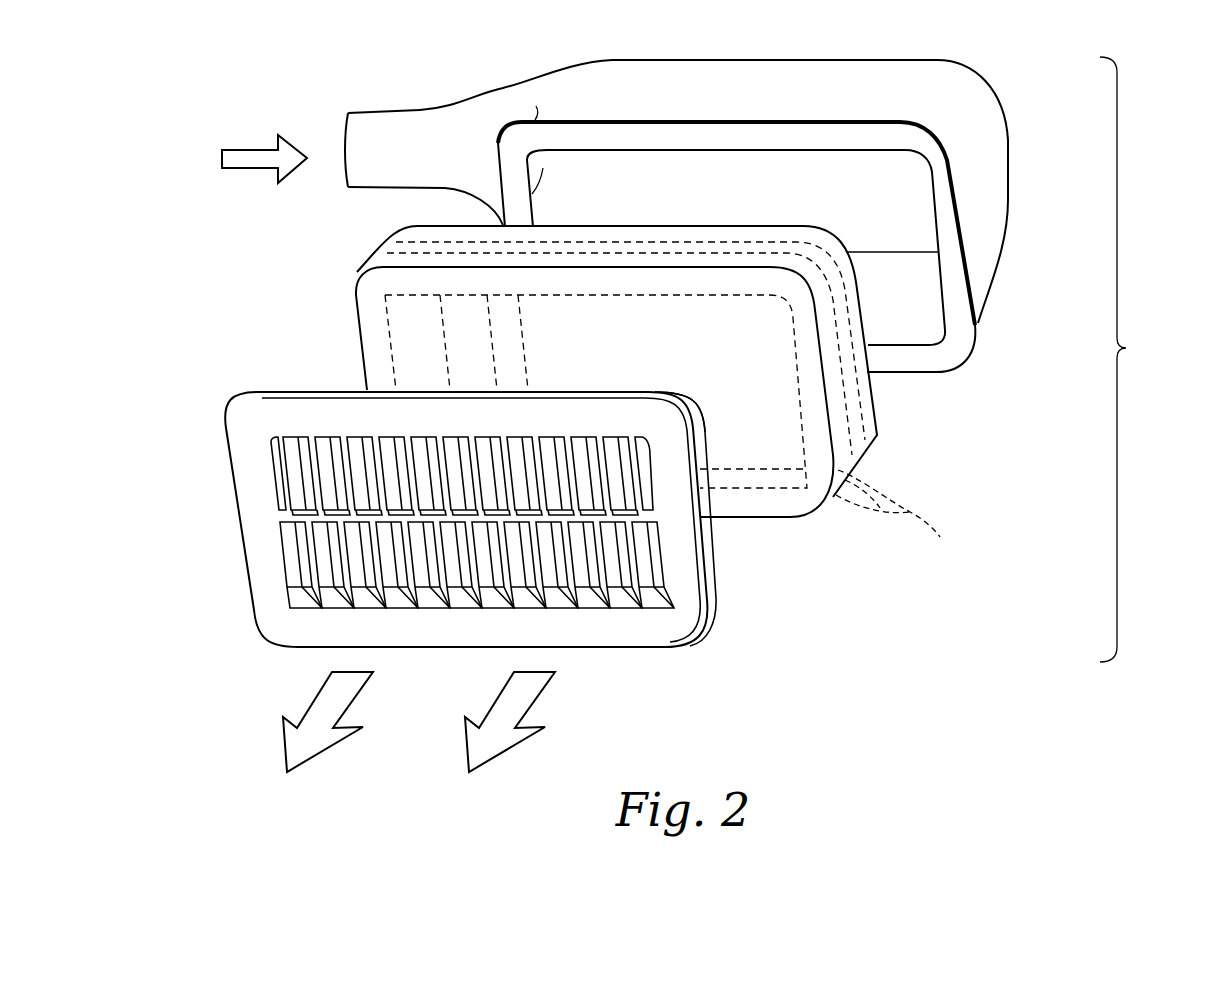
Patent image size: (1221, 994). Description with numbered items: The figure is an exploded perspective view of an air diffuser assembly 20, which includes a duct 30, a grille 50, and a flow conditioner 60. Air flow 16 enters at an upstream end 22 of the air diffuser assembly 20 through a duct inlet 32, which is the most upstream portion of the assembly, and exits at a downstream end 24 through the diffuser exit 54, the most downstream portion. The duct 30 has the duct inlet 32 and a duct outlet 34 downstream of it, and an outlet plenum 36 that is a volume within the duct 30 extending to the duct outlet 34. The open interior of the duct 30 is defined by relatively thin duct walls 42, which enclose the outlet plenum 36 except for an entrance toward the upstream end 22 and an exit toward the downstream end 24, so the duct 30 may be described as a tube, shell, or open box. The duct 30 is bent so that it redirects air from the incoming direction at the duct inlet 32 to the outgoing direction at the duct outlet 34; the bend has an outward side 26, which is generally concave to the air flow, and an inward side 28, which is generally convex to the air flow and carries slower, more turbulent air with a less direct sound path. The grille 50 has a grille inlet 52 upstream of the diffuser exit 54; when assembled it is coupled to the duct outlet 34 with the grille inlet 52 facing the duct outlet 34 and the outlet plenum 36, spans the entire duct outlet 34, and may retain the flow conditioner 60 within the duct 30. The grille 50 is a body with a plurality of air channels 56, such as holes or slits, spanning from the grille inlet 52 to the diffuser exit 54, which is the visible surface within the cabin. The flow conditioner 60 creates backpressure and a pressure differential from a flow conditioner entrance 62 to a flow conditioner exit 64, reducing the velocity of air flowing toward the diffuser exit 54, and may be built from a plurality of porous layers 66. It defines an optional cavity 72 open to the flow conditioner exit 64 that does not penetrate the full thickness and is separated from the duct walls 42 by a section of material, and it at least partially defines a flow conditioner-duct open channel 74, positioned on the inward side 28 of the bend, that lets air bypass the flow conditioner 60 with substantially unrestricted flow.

The air flow 16 is at (248, 147).
The air diffuser assembly 20 is at (1126, 348).
The upstream end 22 is at (368, 92).
The downstream end 24 is at (254, 665).
The outward side 26 is at (1005, 166).
The inward side 28 is at (463, 188).
The duct 30 is at (980, 326).
The duct inlet 32 is at (345, 142).
The duct outlet 34 is at (932, 262).
The outlet plenum 36 is at (730, 162).
The duct walls 42 is at (998, 283).
The grille 50 is at (694, 650).
The grille inlet 52 is at (712, 583).
The diffuser exit 54 is at (610, 648).
The air channels 56 is at (298, 586).
The flow conditioner 60 is at (880, 432).
The flow conditioner entrance 62 is at (873, 393).
The flow conditioner exit 64 is at (788, 520).
The layers 66 is at (908, 512).
The cavity 72 is at (738, 485).
The flow conditioner-duct open channel 74 is at (468, 335).